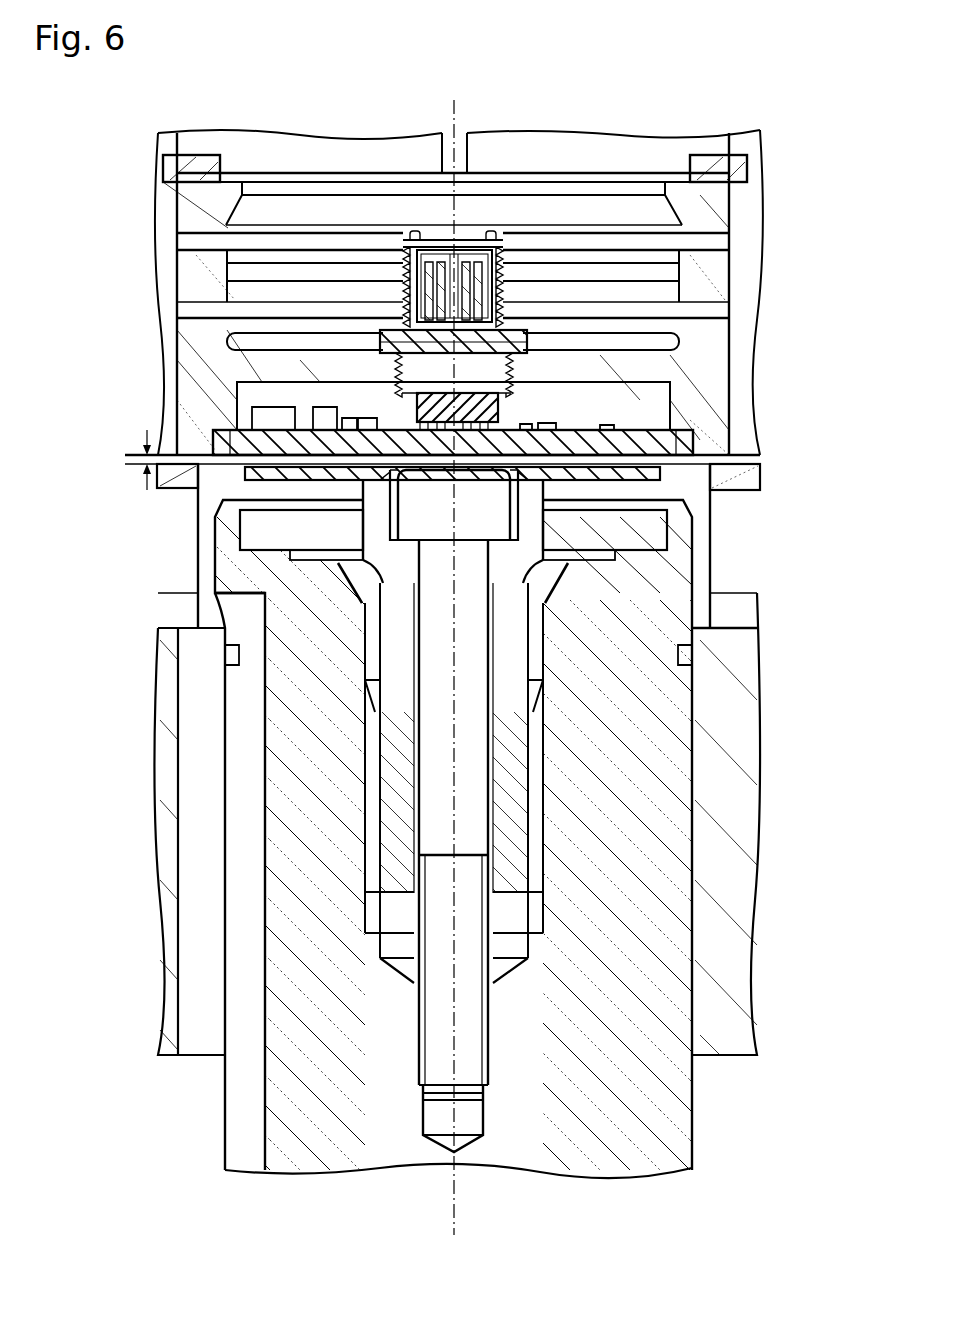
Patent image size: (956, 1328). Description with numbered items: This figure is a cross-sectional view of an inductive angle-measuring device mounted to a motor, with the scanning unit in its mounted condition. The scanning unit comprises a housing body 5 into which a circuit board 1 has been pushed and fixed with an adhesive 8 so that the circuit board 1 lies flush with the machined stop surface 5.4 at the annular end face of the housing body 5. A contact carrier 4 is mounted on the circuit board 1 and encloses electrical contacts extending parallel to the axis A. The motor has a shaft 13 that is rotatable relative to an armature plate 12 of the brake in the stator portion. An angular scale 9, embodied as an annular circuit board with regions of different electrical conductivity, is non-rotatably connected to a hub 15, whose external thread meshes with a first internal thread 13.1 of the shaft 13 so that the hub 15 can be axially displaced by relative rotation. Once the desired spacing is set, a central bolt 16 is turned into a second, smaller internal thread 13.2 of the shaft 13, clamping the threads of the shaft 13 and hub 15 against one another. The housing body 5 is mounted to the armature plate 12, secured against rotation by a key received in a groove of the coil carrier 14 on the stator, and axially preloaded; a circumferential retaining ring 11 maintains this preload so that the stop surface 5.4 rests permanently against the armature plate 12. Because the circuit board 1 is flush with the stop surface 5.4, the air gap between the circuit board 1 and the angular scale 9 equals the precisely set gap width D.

The circuit board 1 is at (394, 440).
The contact carrier 4 is at (503, 405).
The housing body 5 is at (718, 382).
The stop surface 5.4 is at (740, 462).
The adhesive 8 is at (695, 438).
The angular scale 9 is at (660, 473).
The retaining ring 11 is at (731, 172).
The armature plate 12 is at (180, 476).
The shaft 13 is at (680, 1114).
The first internal thread 13.1 is at (540, 893).
The second internal thread 13.2 is at (490, 1002).
The coil carrier 14 is at (740, 275).
The hub 15 is at (537, 538).
The central bolt 16 is at (470, 577).
The axis A is at (452, 120).
The gap width D is at (125, 460).